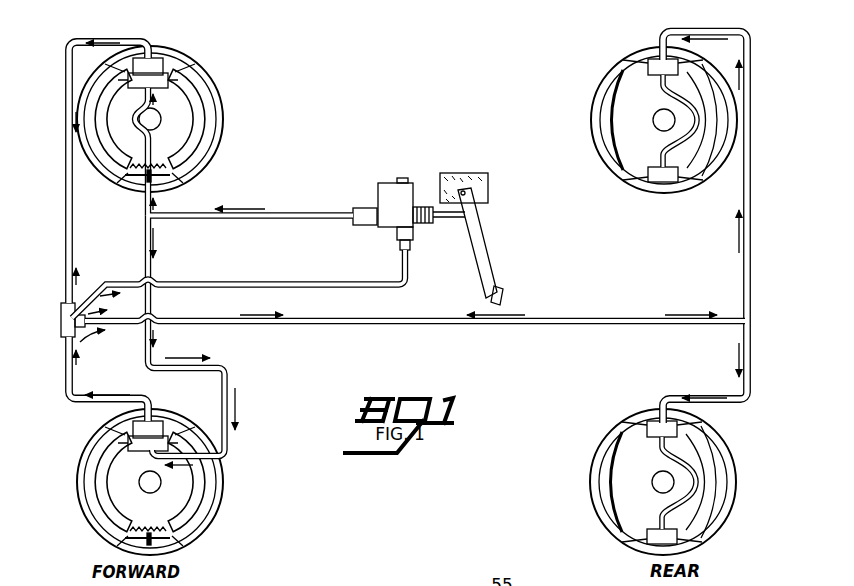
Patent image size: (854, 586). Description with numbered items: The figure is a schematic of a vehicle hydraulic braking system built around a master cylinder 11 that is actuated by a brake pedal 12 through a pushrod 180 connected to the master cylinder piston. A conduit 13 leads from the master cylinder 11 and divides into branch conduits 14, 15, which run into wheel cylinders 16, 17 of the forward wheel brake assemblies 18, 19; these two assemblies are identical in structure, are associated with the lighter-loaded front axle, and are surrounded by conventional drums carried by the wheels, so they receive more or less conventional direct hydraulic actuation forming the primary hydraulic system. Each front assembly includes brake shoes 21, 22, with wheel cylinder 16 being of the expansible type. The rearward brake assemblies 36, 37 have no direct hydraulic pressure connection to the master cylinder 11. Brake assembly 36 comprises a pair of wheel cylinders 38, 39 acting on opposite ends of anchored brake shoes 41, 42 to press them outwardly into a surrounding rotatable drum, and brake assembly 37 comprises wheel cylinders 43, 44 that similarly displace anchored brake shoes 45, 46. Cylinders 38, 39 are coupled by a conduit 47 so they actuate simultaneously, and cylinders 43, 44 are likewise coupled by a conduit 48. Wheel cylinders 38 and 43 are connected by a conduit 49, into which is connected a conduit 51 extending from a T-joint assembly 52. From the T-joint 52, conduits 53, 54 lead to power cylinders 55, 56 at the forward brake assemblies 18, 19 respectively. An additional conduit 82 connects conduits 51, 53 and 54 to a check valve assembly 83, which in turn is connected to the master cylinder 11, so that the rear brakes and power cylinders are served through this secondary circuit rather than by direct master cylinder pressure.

The master cylinder 11 is at (390, 218).
The brake pedal 12 is at (477, 241).
The conduit 13 is at (318, 212).
The branch conduit 14 is at (146, 207).
The branch conduit 15 is at (146, 250).
The wheel cylinder 16 is at (137, 89).
The wheel cylinder 17 is at (140, 448).
The wheel brake assembly 18 is at (224, 87).
The wheel brake assembly 19 is at (224, 495).
The brake shoe 21 is at (100, 159).
The brake shoe 22 is at (205, 128).
The rearward brake assembly 36 is at (598, 77).
The rearward brake assembly 37 is at (598, 440).
The wheel cylinder 38 is at (655, 60).
The wheel cylinder 39 is at (662, 183).
The brake shoe 41 is at (607, 138).
The brake shoe 42 is at (706, 165).
The wheel cylinder 43 is at (655, 425).
The wheel cylinder 44 is at (660, 539).
The brake shoe 45 is at (605, 505).
The brake shoe 46 is at (716, 516).
The conduit 47 is at (697, 125).
The conduit 48 is at (700, 478).
The conduit 49 is at (750, 268).
The conduit 51 is at (434, 320).
The T-joint assembly 52 is at (63, 318).
The conduit 53 is at (65, 246).
The conduit 54 is at (65, 382).
The power cylinder 55 is at (153, 64).
The power cylinder 56 is at (157, 430).
The additional conduit 82 is at (212, 282).
The check valve assembly 83 is at (396, 244).
The pushrod 180 is at (455, 217).